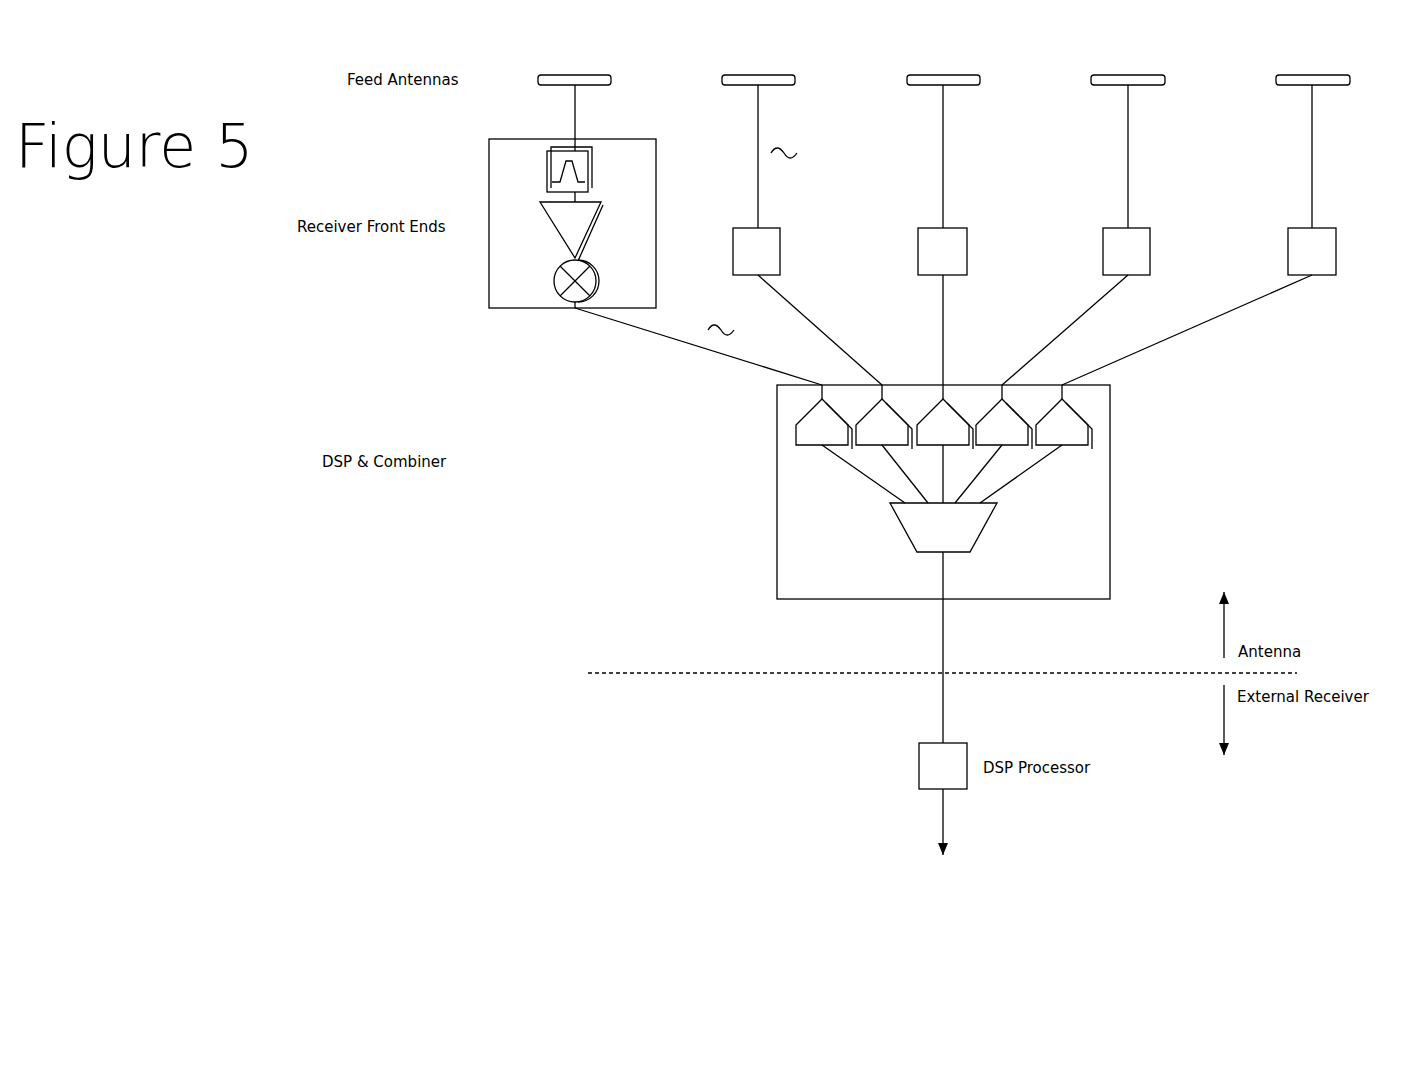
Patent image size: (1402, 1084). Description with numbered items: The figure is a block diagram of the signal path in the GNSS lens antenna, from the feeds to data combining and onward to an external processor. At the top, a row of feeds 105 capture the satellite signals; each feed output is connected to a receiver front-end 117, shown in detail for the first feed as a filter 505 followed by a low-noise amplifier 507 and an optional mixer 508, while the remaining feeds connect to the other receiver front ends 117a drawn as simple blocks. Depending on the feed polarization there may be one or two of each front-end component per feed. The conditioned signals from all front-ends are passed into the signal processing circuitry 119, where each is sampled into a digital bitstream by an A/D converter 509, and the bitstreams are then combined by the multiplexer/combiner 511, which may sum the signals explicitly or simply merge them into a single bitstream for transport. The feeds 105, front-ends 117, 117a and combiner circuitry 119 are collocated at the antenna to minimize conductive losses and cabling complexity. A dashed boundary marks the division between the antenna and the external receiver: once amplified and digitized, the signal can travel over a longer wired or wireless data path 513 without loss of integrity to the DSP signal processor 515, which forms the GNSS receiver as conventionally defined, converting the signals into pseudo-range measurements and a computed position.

The feed 105 is at (930, 90).
The receiver front-end 117 is at (525, 231).
The other receiver front ends 117a is at (916, 248).
The filter 505 is at (545, 172).
The low-noise amplifier 507 is at (553, 233).
The mixer 508 is at (548, 285).
The A/D converter 509 is at (794, 432).
The multiplexer/combiner 511 is at (896, 528).
The signal processing circuitry 119 is at (893, 492).
The wired or wireless data path 513 is at (696, 679).
The signal processor 515 is at (917, 764).